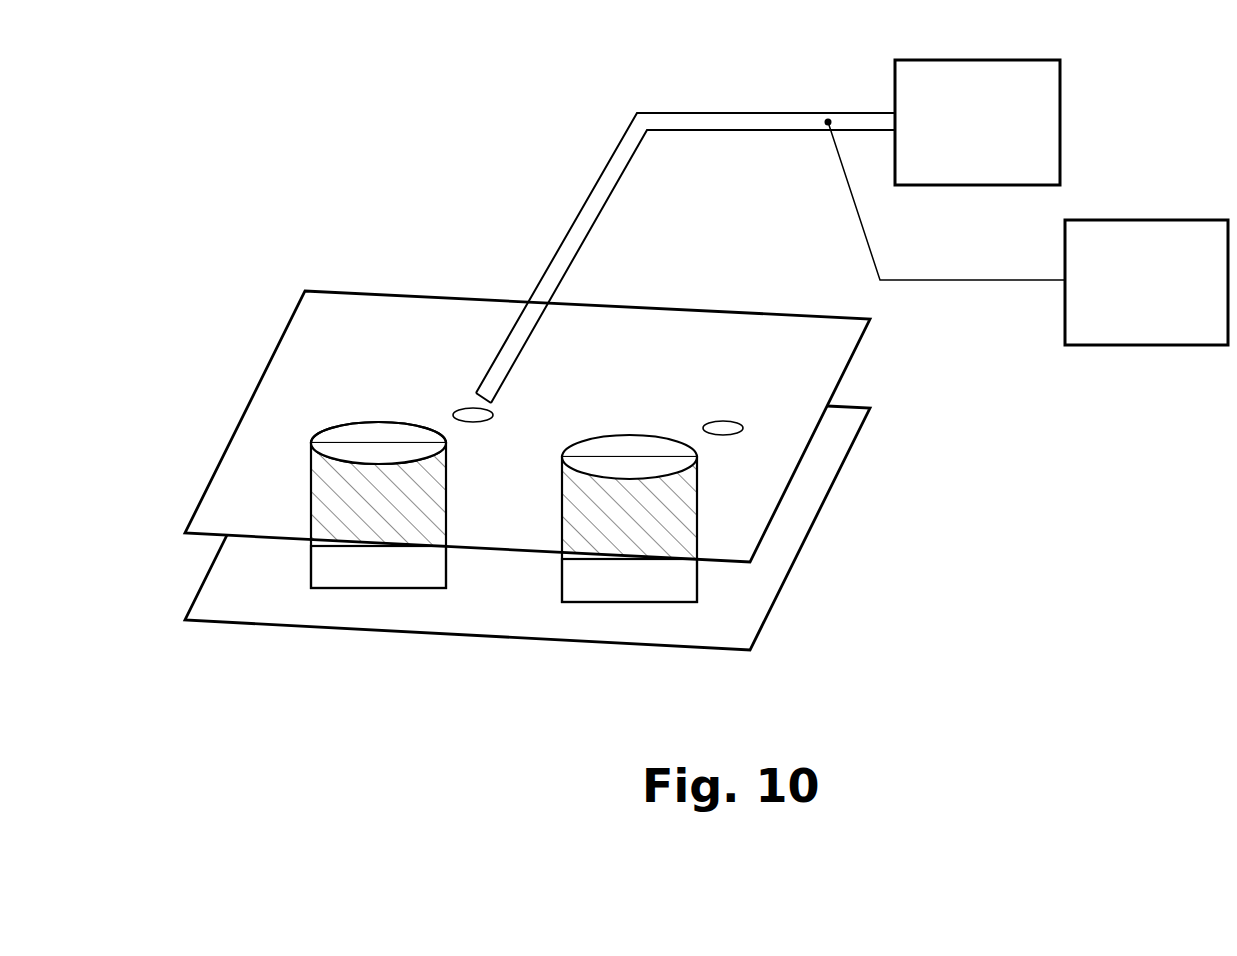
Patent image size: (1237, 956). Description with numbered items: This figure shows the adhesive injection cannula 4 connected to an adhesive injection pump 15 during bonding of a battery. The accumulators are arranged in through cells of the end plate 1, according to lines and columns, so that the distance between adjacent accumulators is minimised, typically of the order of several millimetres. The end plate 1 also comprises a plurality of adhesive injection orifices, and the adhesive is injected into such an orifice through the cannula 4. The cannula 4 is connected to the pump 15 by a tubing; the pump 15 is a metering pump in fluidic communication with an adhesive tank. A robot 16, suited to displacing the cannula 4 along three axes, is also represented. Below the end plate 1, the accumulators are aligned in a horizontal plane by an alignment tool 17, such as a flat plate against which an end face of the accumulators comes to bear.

The end plate 1 is at (405, 291).
The adhesive injection cannula 4 is at (590, 190).
The adhesive injection pump 15 is at (1146, 282).
The robot 16 is at (977, 122).
The alignment tool 17 is at (477, 638).